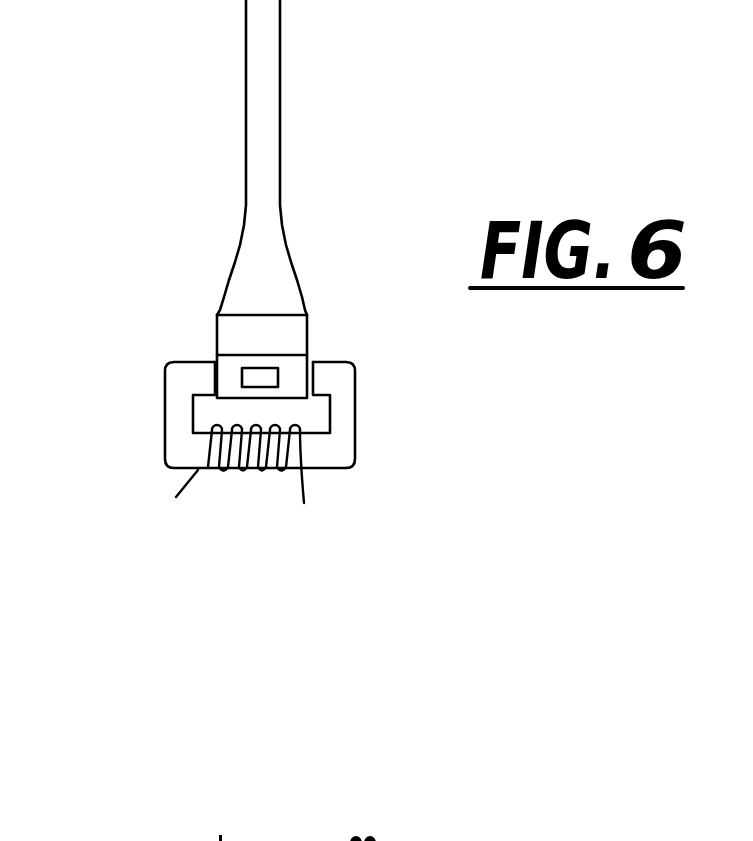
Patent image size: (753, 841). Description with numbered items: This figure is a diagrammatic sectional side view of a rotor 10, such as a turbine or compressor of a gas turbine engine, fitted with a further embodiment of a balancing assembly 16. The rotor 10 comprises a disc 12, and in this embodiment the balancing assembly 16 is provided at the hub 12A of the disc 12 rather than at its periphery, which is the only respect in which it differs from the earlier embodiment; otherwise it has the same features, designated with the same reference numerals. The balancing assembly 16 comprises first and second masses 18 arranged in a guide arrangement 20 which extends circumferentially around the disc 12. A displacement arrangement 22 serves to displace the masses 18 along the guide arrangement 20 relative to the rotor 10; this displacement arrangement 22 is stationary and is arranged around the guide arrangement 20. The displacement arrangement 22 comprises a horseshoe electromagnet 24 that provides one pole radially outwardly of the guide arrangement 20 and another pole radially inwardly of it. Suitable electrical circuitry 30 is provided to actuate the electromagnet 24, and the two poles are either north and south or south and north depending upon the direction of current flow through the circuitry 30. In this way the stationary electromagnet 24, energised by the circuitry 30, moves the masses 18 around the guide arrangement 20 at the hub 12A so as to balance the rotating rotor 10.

The rotor 10 is at (345, 201).
The disc 12 is at (322, 321).
The hub 12A is at (237, 363).
The balancing assembly 16 is at (246, 510).
The masses 18 is at (277, 385).
The guide arrangement 20 is at (227, 379).
The displacement arrangement 22 is at (142, 445).
The horseshoe electromagnet 24 is at (335, 438).
The electrical circuitry 30 is at (301, 488).